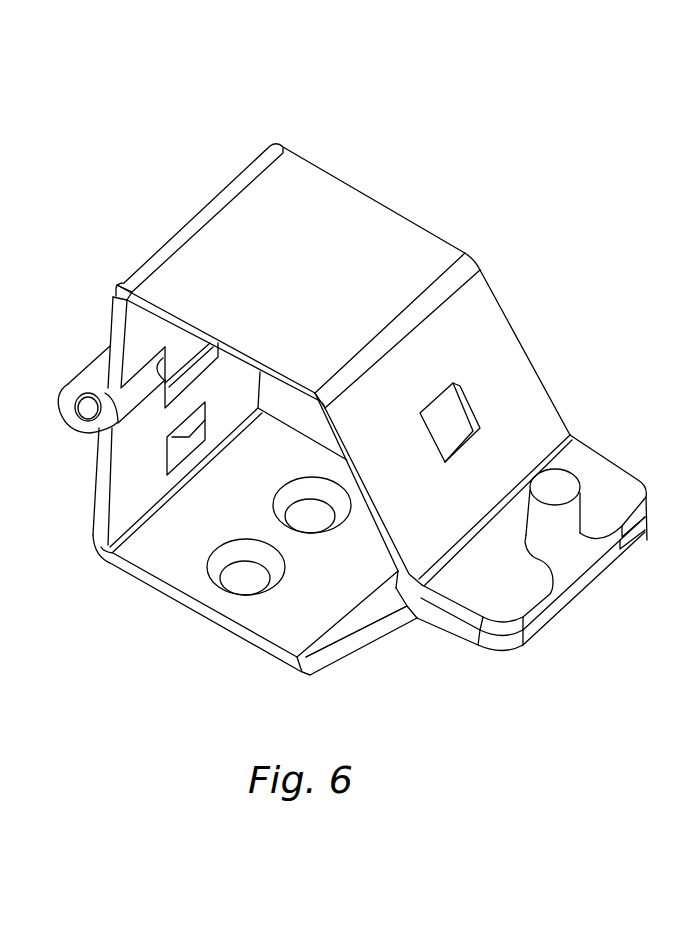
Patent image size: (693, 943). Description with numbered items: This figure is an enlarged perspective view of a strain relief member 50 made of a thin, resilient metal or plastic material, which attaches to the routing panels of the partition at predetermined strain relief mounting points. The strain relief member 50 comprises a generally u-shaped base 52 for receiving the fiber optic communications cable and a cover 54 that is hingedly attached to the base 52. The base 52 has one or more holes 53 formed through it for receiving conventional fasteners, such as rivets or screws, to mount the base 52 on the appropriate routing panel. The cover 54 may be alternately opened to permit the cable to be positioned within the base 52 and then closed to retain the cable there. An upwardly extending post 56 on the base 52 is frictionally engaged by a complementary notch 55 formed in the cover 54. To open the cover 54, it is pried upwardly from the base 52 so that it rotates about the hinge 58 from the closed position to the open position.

The strain relief member 50 is at (447, 148).
The base 52 is at (292, 617).
The holes 53 is at (237, 577).
The cover 54 is at (497, 332).
The notch 55 is at (568, 557).
The post 56 is at (566, 484).
The hinge 58 is at (91, 408).